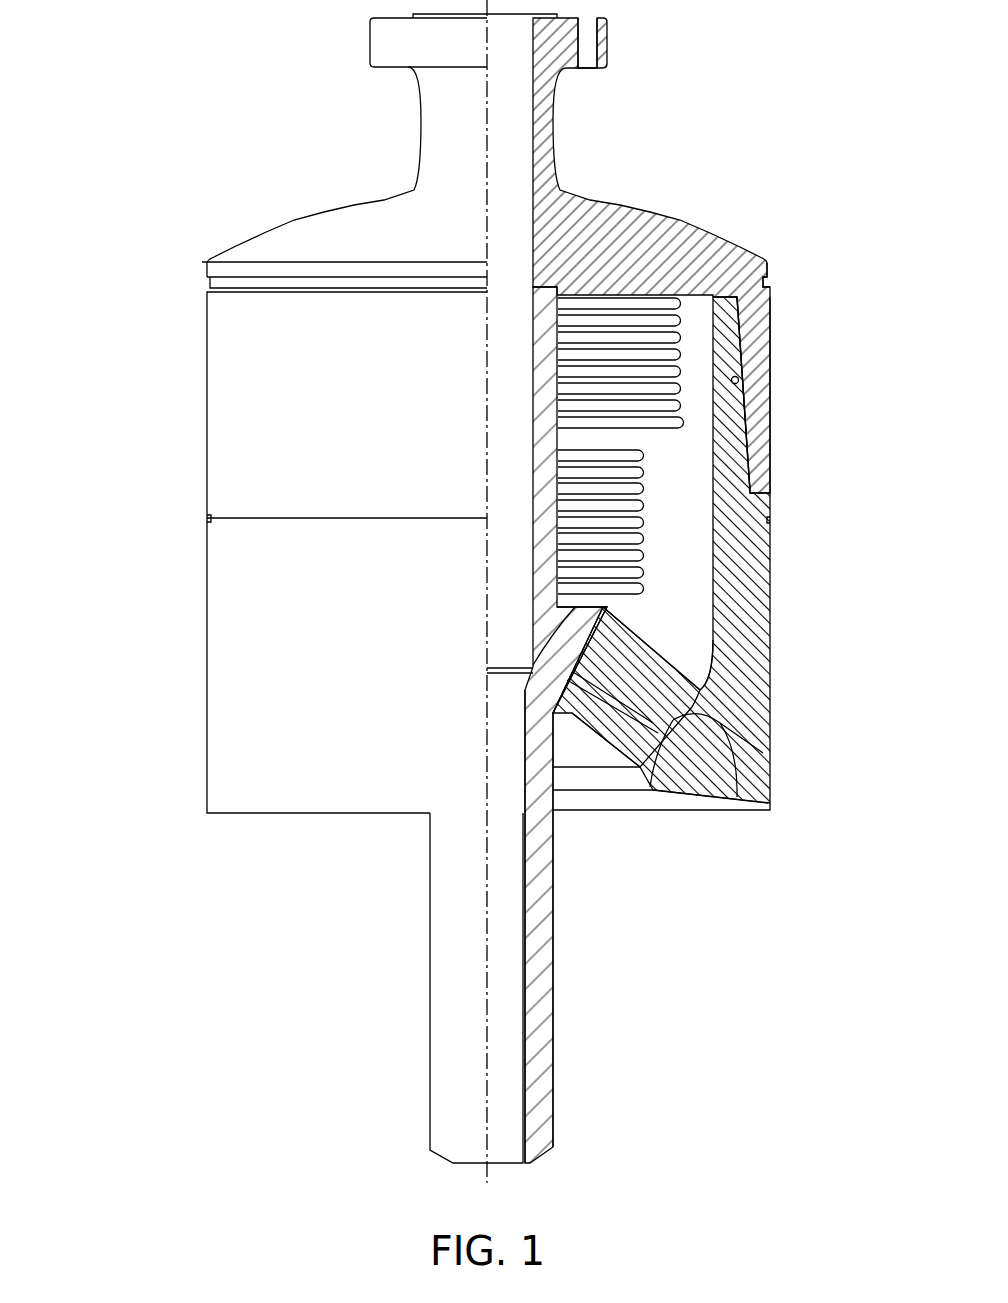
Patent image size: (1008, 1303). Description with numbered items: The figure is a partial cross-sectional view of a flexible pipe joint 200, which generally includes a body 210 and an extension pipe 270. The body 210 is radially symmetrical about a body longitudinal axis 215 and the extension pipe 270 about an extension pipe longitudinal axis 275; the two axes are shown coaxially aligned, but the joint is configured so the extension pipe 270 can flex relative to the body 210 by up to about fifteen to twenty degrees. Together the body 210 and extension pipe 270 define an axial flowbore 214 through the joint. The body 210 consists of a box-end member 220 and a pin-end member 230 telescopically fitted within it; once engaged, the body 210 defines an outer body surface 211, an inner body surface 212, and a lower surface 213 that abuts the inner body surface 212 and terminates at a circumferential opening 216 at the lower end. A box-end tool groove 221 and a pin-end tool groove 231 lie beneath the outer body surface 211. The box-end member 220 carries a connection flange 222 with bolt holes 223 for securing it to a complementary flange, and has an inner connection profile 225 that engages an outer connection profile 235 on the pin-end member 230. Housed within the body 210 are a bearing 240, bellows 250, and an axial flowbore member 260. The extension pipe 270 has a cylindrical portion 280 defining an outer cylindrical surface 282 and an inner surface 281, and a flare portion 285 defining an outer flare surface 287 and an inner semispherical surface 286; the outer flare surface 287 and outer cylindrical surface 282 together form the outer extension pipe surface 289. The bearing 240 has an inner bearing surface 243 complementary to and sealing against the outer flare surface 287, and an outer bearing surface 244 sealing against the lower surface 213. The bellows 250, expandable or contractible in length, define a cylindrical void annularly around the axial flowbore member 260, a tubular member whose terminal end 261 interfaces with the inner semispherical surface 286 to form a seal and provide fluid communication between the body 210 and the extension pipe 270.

The flexible pipe joint 200 is at (130, 322).
The body 210 is at (775, 558).
The outer body surface 211 is at (771, 330).
The inner body surface 212 is at (710, 622).
The lower surface 213 is at (771, 771).
The axial flowbore 214 is at (507, 407).
The body longitudinal axis 215 is at (496, 364).
The circumferential opening 216 is at (608, 784).
The box-end member 220 is at (648, 222).
The box-end tool groove 221 is at (208, 283).
The connection flange 222 is at (377, 50).
The bolt holes 223 is at (592, 42).
The inner connection profile 225 is at (745, 388).
The pin-end member 230 is at (771, 753).
The pin-end tool groove 231 is at (207, 520).
The outer connection profile 235 is at (752, 483).
The bearing 240 is at (655, 665).
The inner bearing surface 243 is at (583, 680).
The outer bearing surface 244 is at (713, 707).
The bellows 250 is at (682, 387).
The axial flowbore member 260 is at (533, 458).
The terminal end 261 is at (737, 790).
The extension pipe 270 is at (428, 988).
The extension pipe longitudinal axis 275 is at (495, 880).
The cylindrical portion 280 is at (556, 997).
The inner surface 281 is at (523, 898).
The outer cylindrical surface 282 is at (554, 1048).
The flare portion 285 is at (531, 657).
The inner semispherical surface 286 is at (578, 618).
The outer flare surface 287 is at (651, 788).
The outer extension pipe surface 289 is at (556, 762).